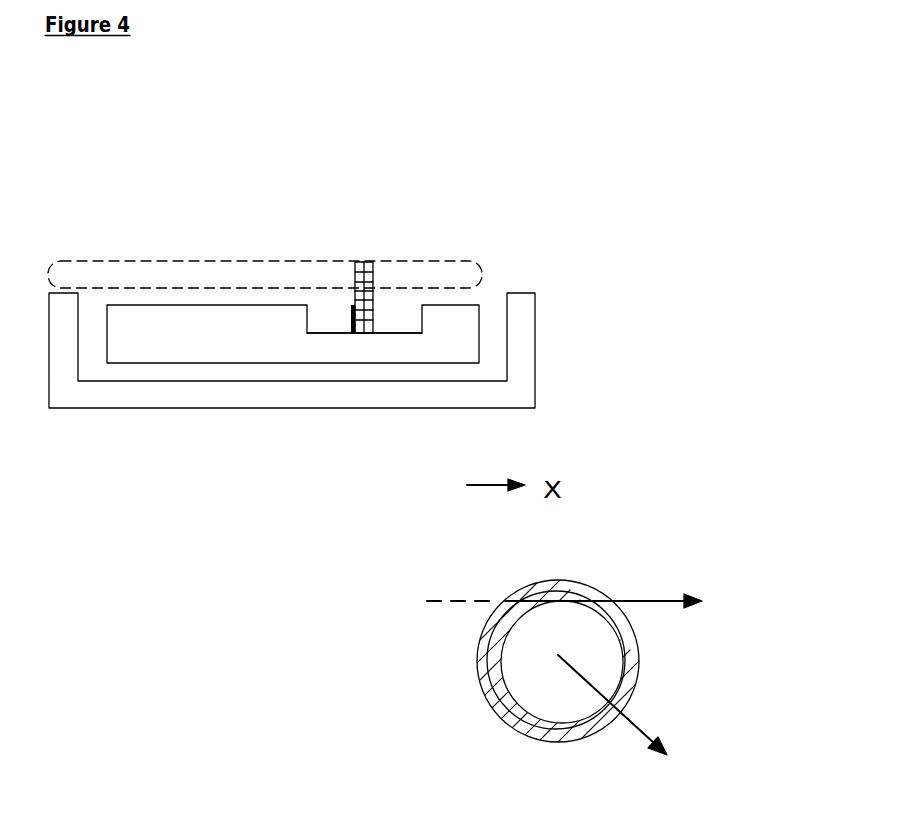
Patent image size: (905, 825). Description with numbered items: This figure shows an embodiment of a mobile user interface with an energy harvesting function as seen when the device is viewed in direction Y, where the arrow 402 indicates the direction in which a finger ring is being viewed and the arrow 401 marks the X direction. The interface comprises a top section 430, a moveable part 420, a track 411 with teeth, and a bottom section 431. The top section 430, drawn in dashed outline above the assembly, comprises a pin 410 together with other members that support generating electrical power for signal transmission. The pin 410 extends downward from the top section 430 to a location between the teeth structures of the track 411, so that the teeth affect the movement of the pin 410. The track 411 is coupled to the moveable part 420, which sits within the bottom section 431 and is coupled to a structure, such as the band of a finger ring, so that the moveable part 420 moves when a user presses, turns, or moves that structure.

The pin 410 is at (367, 276).
The track 411 is at (388, 320).
The moveable part 420 is at (448, 333).
The top section 430 is at (445, 259).
The bottom section 431 is at (536, 330).
The direction X 401 is at (718, 794).
The arrow indicating viewing direction Y 402 is at (742, 636).